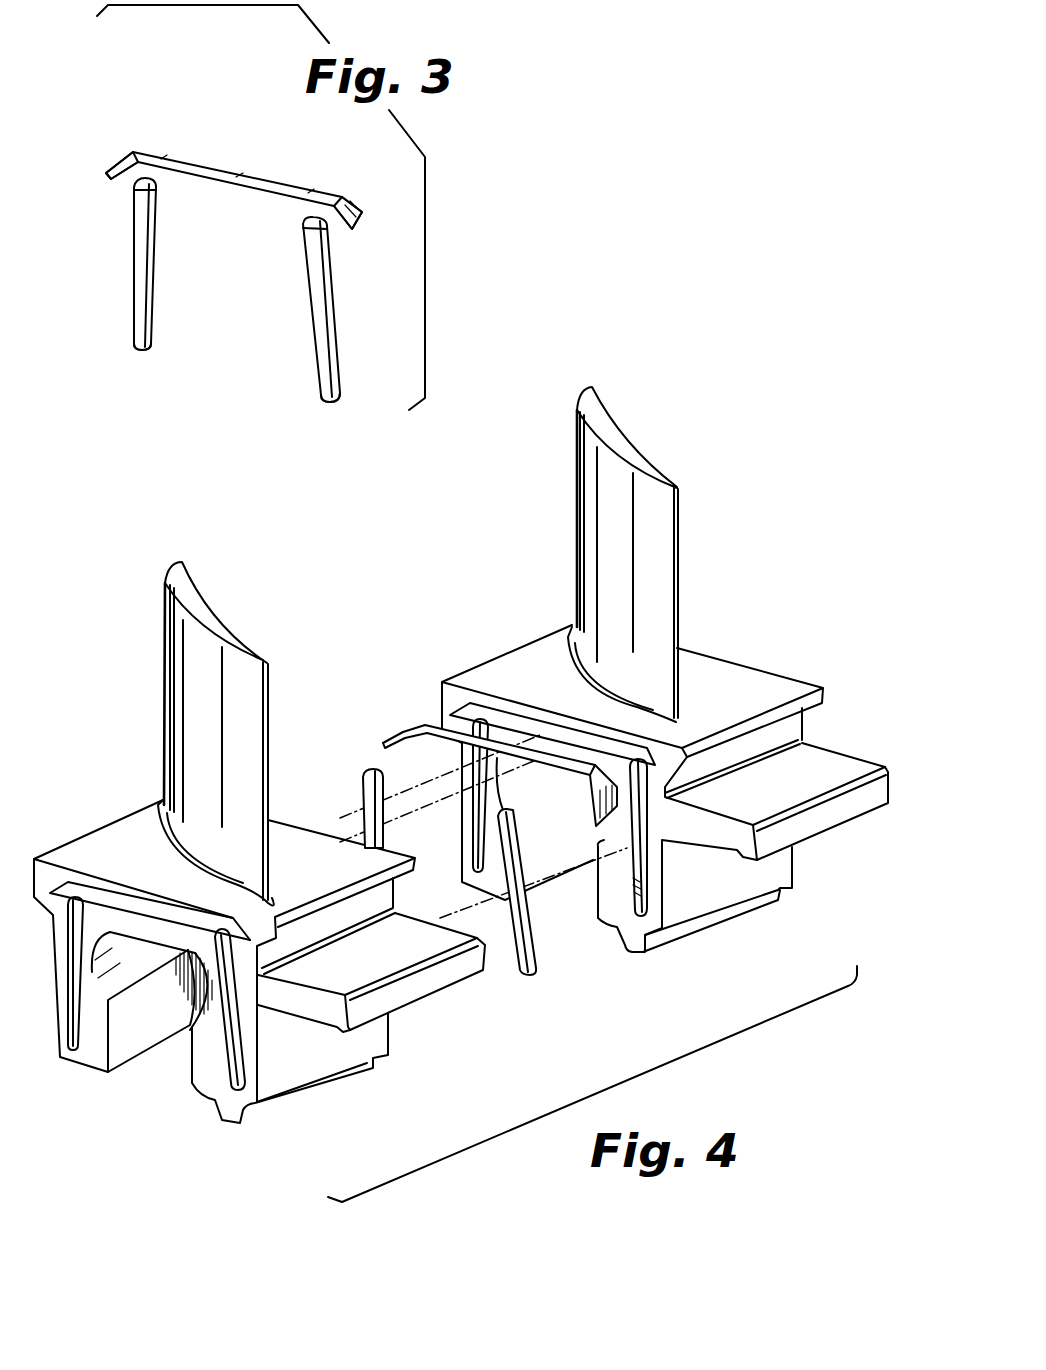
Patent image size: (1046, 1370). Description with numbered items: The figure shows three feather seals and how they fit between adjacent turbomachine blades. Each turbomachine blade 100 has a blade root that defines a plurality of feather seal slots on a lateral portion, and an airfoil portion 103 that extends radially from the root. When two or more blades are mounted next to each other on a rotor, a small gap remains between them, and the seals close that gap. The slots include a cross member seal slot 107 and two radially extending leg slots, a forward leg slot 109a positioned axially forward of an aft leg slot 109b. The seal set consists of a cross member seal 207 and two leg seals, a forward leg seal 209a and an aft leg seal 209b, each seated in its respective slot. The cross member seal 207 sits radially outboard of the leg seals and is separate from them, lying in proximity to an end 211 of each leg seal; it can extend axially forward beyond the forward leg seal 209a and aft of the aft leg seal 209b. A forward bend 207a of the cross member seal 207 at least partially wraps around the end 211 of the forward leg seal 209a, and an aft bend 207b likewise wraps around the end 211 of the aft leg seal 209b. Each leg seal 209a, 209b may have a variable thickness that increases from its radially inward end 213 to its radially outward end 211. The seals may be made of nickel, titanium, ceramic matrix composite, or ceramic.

In FIG. 4, the turbomachine blade 100 is at (461, 755).
In FIG. 4, the airfoil portion 103 is at (165, 615).
In FIG. 4, the cross member seal slot 107 is at (532, 718).
In FIG. 4, the forward leg slot 109a is at (467, 832).
In FIG. 4, the aft leg slot 109b is at (632, 865).
In FIG. 3, the cross member seal 207 is at (223, 168).
In FIG. 4, the cross member seal 207 is at (430, 723).
In FIG. 3, the forward bend 207a is at (113, 169).
In FIG. 3, the aft bend 207b is at (372, 176).
In FIG. 3, the forward leg seal 209a is at (135, 283).
In FIG. 4, the forward leg seal 209a is at (365, 797).
In FIG. 3, the aft leg seal 209b is at (336, 326).
In FIG. 4, the aft leg seal 209b is at (517, 942).
In FIG. 3, the radially outward end of leg seal 211 is at (164, 193).
In FIG. 3, the radially inward end of leg seal 213 is at (151, 359).